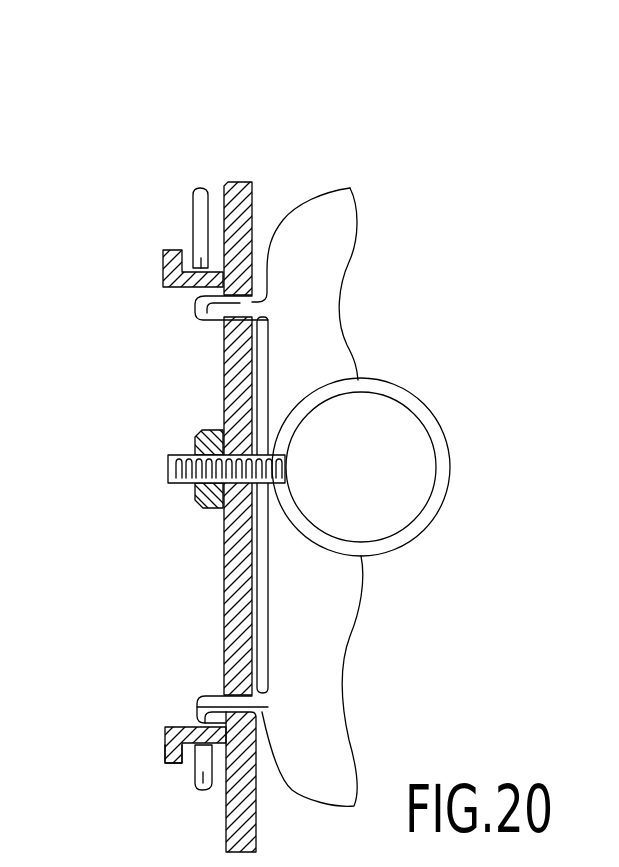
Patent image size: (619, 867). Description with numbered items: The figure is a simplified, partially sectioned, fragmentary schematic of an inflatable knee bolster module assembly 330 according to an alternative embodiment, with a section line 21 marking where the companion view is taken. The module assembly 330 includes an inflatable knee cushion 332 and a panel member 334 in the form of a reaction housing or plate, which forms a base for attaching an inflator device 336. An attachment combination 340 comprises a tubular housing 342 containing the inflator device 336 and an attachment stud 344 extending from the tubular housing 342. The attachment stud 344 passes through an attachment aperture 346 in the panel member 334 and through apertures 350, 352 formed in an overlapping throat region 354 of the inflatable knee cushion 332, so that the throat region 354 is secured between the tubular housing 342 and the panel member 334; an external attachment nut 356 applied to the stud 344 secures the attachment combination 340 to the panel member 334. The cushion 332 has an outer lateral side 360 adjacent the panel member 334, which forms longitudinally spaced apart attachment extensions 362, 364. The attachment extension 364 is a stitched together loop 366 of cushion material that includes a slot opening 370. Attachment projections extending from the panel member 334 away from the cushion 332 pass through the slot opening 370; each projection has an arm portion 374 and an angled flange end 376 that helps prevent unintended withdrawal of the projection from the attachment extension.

The section line 21 is at (108, 598).
The inflatable knee bolster module assembly 330 is at (284, 130).
The inflatable knee cushion 332 is at (326, 189).
The panel member 334 is at (240, 182).
The inflator device 336 is at (407, 478).
The attachment combination 340 is at (396, 579).
The tubular housing 342 is at (430, 413).
The attachment stud 344 is at (183, 450).
The attachment aperture 346 is at (225, 513).
The aperture 350 is at (272, 492).
The aperture 352 is at (270, 435).
The throat region 354 is at (250, 424).
The external attachment nut 356 is at (195, 493).
The outer lateral side 360 is at (253, 362).
The attachment extension 362 is at (192, 222).
The attachment extension 364 is at (257, 810).
The stitched together loop 366 is at (220, 730).
The slot opening 370 is at (200, 778).
The arm portion 374 is at (185, 728).
The angled flange end 376 is at (167, 743).